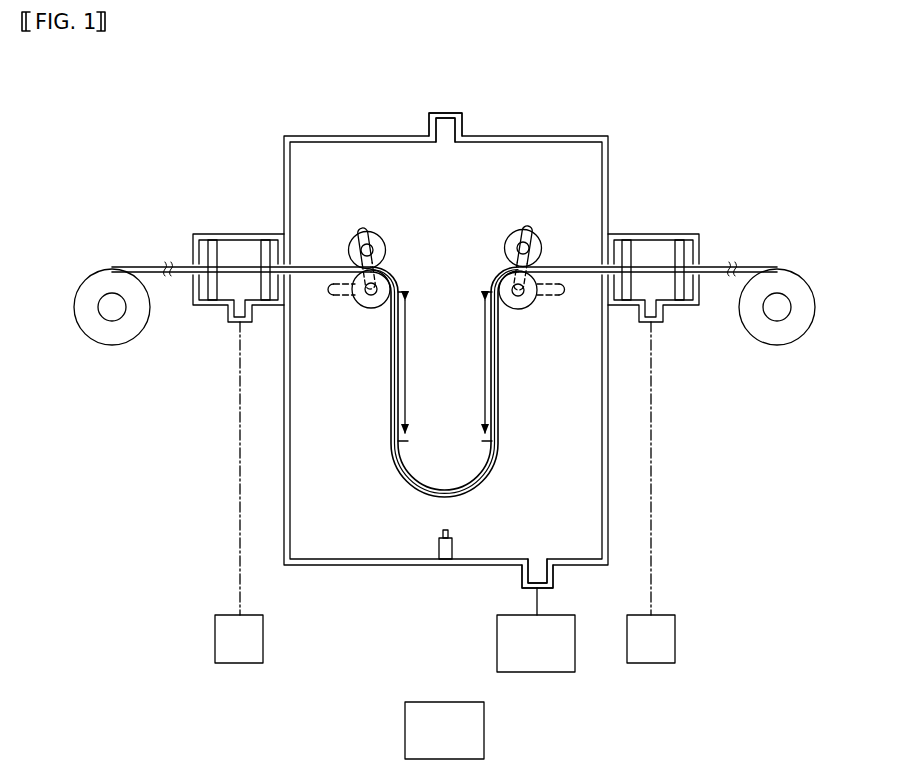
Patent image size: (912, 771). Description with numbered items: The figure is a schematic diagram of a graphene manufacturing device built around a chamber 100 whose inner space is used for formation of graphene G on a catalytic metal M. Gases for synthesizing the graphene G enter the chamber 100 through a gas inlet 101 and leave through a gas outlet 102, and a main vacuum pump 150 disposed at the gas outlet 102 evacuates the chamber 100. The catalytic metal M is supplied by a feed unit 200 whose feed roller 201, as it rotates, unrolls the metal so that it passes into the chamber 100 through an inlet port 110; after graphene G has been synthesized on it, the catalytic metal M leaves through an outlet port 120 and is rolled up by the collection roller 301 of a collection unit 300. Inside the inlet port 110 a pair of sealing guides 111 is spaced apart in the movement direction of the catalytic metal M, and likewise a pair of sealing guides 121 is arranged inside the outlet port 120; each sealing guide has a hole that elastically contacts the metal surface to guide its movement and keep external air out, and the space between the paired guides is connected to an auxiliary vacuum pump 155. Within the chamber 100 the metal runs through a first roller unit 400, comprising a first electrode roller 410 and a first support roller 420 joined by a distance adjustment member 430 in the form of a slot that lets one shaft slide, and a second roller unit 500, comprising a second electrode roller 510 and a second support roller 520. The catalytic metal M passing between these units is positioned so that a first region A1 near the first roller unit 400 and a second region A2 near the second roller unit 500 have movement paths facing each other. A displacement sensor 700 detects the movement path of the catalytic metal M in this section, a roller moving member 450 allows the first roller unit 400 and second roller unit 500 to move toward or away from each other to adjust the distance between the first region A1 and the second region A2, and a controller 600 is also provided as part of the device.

The chamber 100 is at (341, 133).
The gas inlet 101 is at (446, 118).
The gas outlet 102 is at (530, 562).
The inlet port 110 is at (229, 389).
The sealing guide 111 is at (256, 283).
The outlet port 120 is at (663, 389).
The sealing guide 121 is at (632, 283).
The main vacuum pump 150 is at (536, 630).
The auxiliary vacuum pump 155 is at (239, 639).
The feed unit 200 is at (84, 277).
The feed roller 201 is at (98, 309).
The collection unit 300 is at (805, 277).
The collection roller 301 is at (791, 306).
The first roller unit 400 is at (370, 288).
The first electrode roller 410 is at (386, 273).
The first support roller 420 is at (375, 233).
The distance adjustment member 430 is at (362, 230).
The roller moving member 450 is at (330, 289).
The second roller unit 500 is at (524, 288).
The second electrode roller 510 is at (500, 274).
The second support roller 520 is at (514, 233).
The controller 600 is at (444, 730).
The displacement sensor 700 is at (439, 550).
The catalytic metal M is at (178, 264).
The graphene G is at (715, 264).
The first region A1 is at (407, 338).
The second region A2 is at (485, 384).